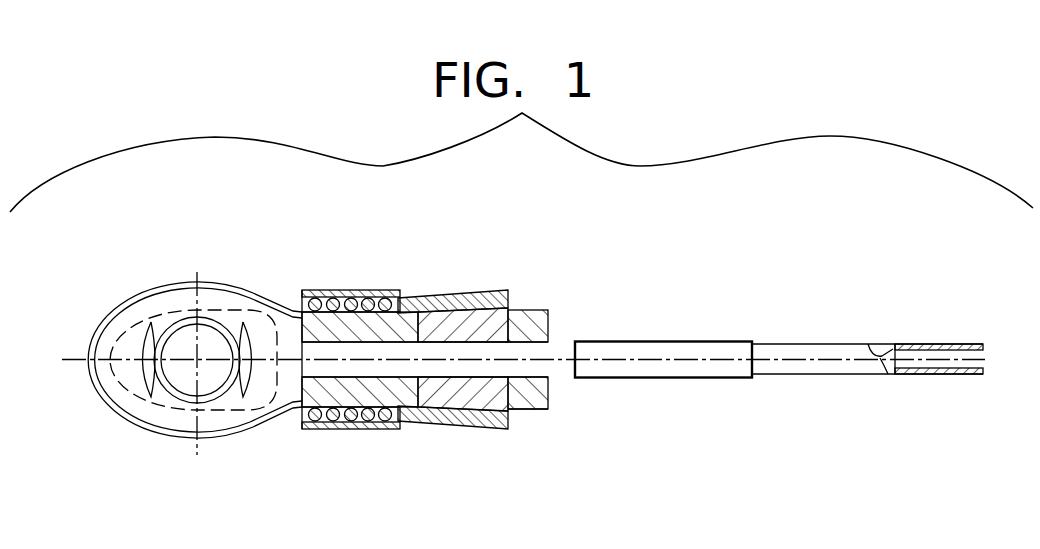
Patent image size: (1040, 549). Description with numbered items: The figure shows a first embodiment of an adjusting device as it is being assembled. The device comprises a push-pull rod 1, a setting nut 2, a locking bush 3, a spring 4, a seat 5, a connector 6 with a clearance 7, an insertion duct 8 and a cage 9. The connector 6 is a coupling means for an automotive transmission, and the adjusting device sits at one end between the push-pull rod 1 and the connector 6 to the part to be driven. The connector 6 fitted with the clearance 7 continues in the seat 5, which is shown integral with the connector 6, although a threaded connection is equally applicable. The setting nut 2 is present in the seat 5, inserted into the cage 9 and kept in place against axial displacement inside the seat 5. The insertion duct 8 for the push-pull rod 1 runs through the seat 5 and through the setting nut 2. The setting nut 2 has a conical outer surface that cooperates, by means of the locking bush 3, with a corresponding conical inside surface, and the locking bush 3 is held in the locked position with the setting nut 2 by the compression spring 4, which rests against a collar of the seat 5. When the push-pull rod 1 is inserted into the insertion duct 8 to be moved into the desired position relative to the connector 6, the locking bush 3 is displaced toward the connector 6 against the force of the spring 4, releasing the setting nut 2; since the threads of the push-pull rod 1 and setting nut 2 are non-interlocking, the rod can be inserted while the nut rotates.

The push-pull rod 1 is at (655, 358).
The setting nut 2 is at (515, 309).
The locking bush 3 is at (459, 291).
The spring 4 is at (375, 291).
The seat 5 is at (320, 325).
The connector 6 is at (160, 300).
The clearance 7 is at (197, 360).
The insertion duct 8 is at (537, 362).
The cage 9 is at (533, 409).